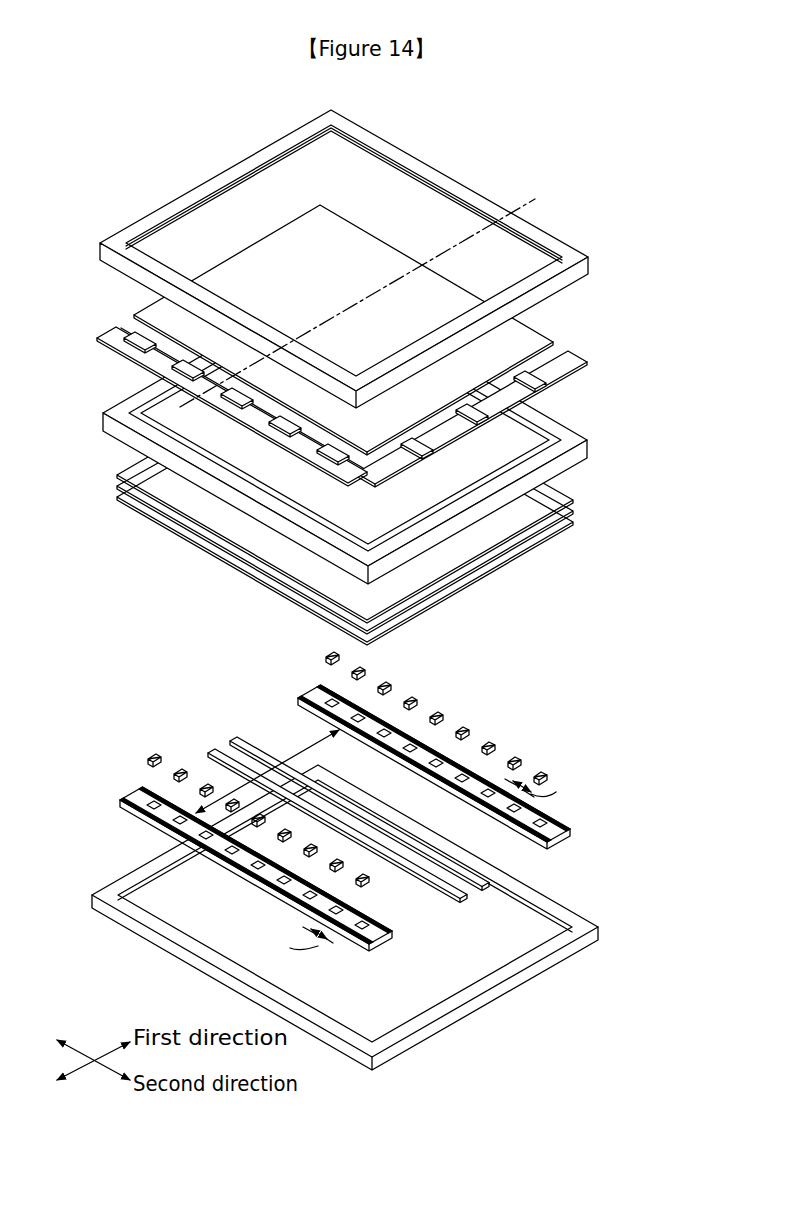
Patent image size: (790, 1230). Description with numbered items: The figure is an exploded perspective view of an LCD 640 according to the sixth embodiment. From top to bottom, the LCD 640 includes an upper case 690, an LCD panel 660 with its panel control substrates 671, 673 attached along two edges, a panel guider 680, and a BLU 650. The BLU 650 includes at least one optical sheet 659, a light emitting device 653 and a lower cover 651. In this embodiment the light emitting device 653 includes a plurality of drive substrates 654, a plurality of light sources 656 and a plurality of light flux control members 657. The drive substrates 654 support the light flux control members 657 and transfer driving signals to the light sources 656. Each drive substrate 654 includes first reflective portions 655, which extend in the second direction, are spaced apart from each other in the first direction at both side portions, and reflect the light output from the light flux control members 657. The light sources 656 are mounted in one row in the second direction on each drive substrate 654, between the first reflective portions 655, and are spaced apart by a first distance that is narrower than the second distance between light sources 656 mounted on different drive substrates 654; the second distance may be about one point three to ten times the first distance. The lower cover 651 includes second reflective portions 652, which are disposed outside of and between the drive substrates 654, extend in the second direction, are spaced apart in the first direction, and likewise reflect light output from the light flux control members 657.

The LCD 640 is at (601, 123).
The BLU 650 is at (620, 515).
The lower cover 651 is at (562, 903).
The second reflective portions 652 is at (457, 865).
The light emitting device 653 is at (322, 788).
The drive substrates 654 is at (325, 699).
The first reflective portions 655 is at (312, 690).
The light sources 656 is at (316, 709).
The light flux control members 657 is at (326, 652).
The optical sheet 659 is at (575, 494).
The LCD panel 660 is at (530, 333).
The panel control substrate 671 is at (580, 361).
The panel control substrate 673 is at (107, 335).
The panel guider 680 is at (575, 438).
The upper case 690 is at (590, 268).